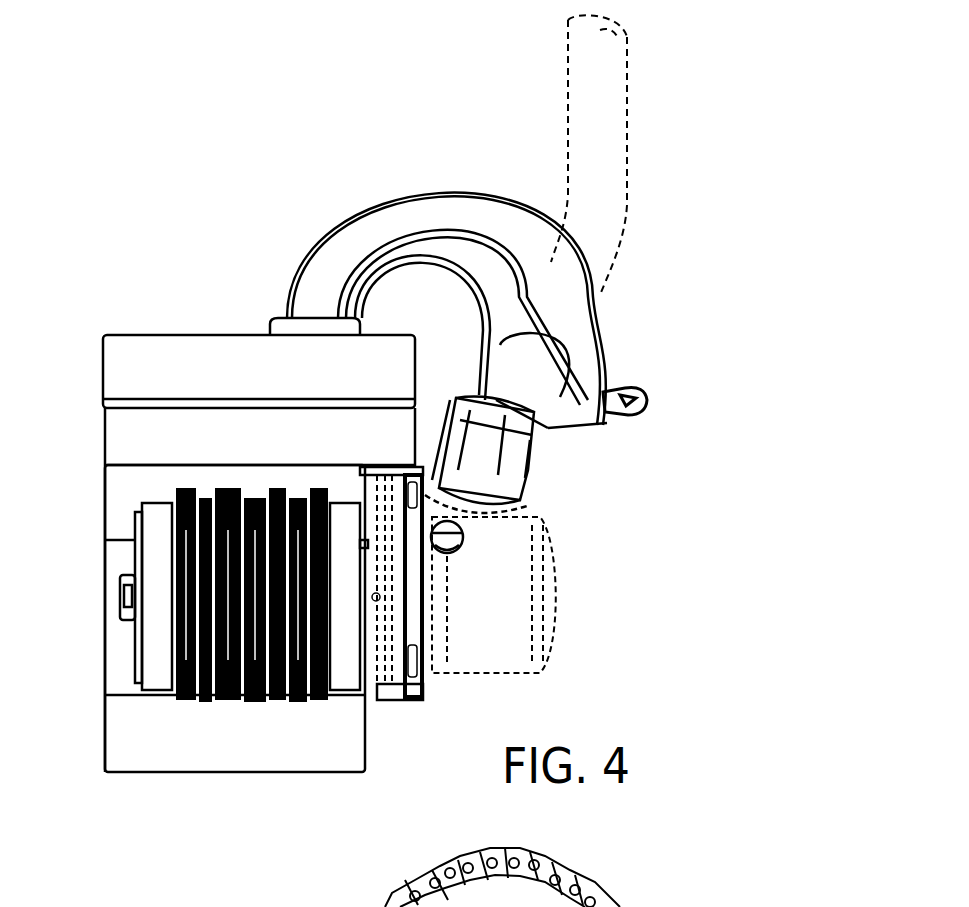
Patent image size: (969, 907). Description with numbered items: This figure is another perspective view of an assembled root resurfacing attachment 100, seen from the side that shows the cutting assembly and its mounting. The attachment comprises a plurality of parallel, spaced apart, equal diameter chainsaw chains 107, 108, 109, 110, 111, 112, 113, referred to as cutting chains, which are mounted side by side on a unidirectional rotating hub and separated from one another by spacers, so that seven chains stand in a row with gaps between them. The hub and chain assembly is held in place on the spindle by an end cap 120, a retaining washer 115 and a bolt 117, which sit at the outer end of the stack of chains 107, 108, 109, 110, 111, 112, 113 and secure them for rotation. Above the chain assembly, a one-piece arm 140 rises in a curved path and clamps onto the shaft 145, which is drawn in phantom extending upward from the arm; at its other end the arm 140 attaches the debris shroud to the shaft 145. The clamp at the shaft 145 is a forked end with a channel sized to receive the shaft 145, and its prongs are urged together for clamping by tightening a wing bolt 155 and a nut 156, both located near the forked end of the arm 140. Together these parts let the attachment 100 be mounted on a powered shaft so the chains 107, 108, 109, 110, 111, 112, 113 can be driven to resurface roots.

The root resurfacing attachment 100 is at (567, 590).
The cutting chain 107 is at (185, 697).
The cutting chain 108 is at (213, 702).
The cutting chain 109 is at (233, 700).
The cutting chain 110 is at (253, 702).
The cutting chain 111 is at (278, 702).
The cutting chain 112 is at (296, 702).
The cutting chain 113 is at (320, 702).
The retaining washer 115 is at (135, 655).
The bolt 117 is at (122, 590).
The end cap 120 is at (160, 675).
The arm 140 is at (422, 200).
The shaft 145 is at (613, 222).
The wing bolt 155 is at (634, 418).
The nut 156 is at (475, 362).